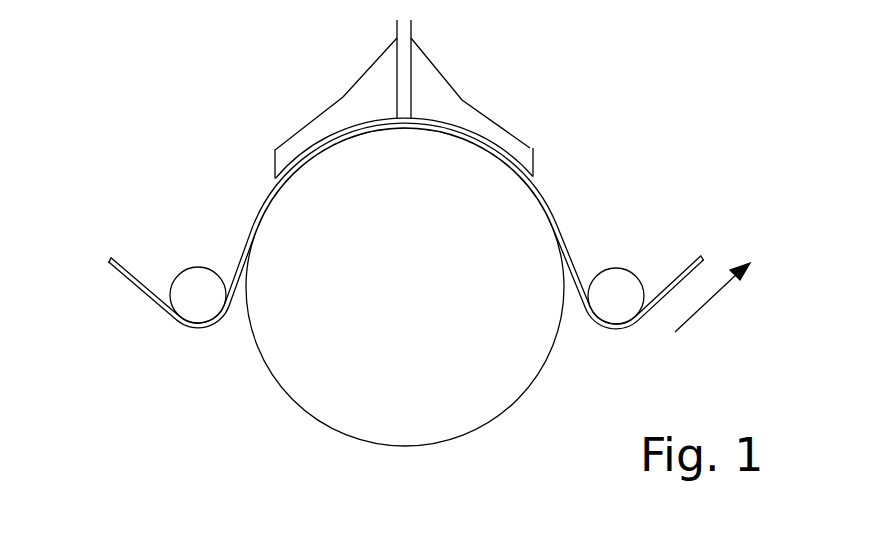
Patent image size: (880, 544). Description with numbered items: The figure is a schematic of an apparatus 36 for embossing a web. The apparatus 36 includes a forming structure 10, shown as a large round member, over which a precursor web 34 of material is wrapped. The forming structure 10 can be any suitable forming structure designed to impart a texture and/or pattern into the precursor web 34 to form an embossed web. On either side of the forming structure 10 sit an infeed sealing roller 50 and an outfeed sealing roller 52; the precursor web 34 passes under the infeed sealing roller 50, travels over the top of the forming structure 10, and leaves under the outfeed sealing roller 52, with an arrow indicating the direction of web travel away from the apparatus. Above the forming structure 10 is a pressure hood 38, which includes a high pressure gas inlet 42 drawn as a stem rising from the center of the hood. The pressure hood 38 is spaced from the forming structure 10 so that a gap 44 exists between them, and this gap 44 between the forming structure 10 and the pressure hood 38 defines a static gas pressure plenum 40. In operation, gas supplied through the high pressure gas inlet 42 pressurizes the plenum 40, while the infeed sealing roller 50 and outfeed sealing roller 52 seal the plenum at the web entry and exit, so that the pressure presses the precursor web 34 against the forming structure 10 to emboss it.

The forming structure 10 is at (485, 423).
The precursor web 34 is at (132, 287).
The apparatus 36 is at (354, 100).
The pressure hood 38 is at (478, 110).
The static gas pressure plenum 40 is at (517, 157).
The high pressure gas inlet 42 is at (412, 85).
The gap 44 is at (278, 181).
The infeed sealing roller 50 is at (193, 312).
The outfeed sealing roller 52 is at (618, 308).